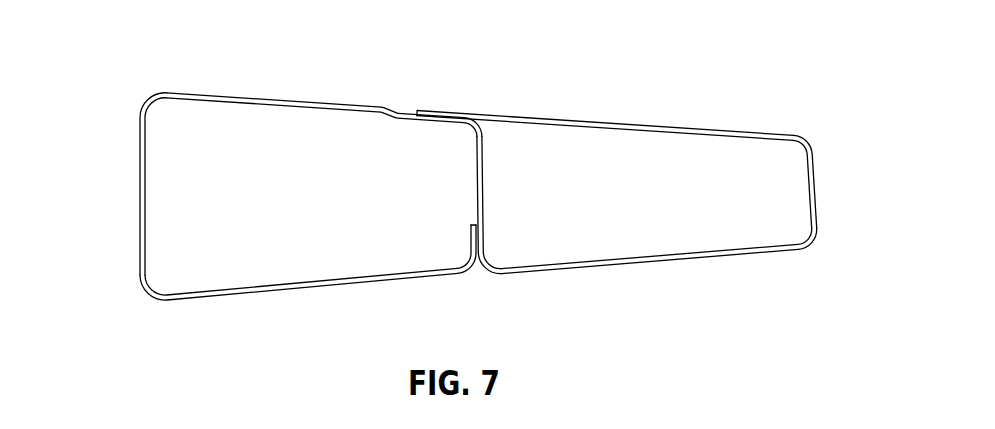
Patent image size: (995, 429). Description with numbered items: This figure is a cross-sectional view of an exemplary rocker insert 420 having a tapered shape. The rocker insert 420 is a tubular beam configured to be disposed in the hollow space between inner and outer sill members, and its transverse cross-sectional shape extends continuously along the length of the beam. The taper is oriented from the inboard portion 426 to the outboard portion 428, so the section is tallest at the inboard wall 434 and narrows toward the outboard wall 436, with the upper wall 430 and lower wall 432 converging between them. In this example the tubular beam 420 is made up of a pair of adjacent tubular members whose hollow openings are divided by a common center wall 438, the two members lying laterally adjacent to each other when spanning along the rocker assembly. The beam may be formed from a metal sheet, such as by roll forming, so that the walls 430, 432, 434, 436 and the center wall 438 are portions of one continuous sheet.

The rocker insert 420 is at (133, 82).
The inboard portion 426 is at (135, 278).
The outboard portion 428 is at (828, 252).
The upper wall 430 is at (478, 112).
The lower wall 432 is at (342, 288).
The inboard wall 434 is at (137, 220).
The outboard wall 436 is at (815, 188).
The common center wall 438 is at (477, 193).